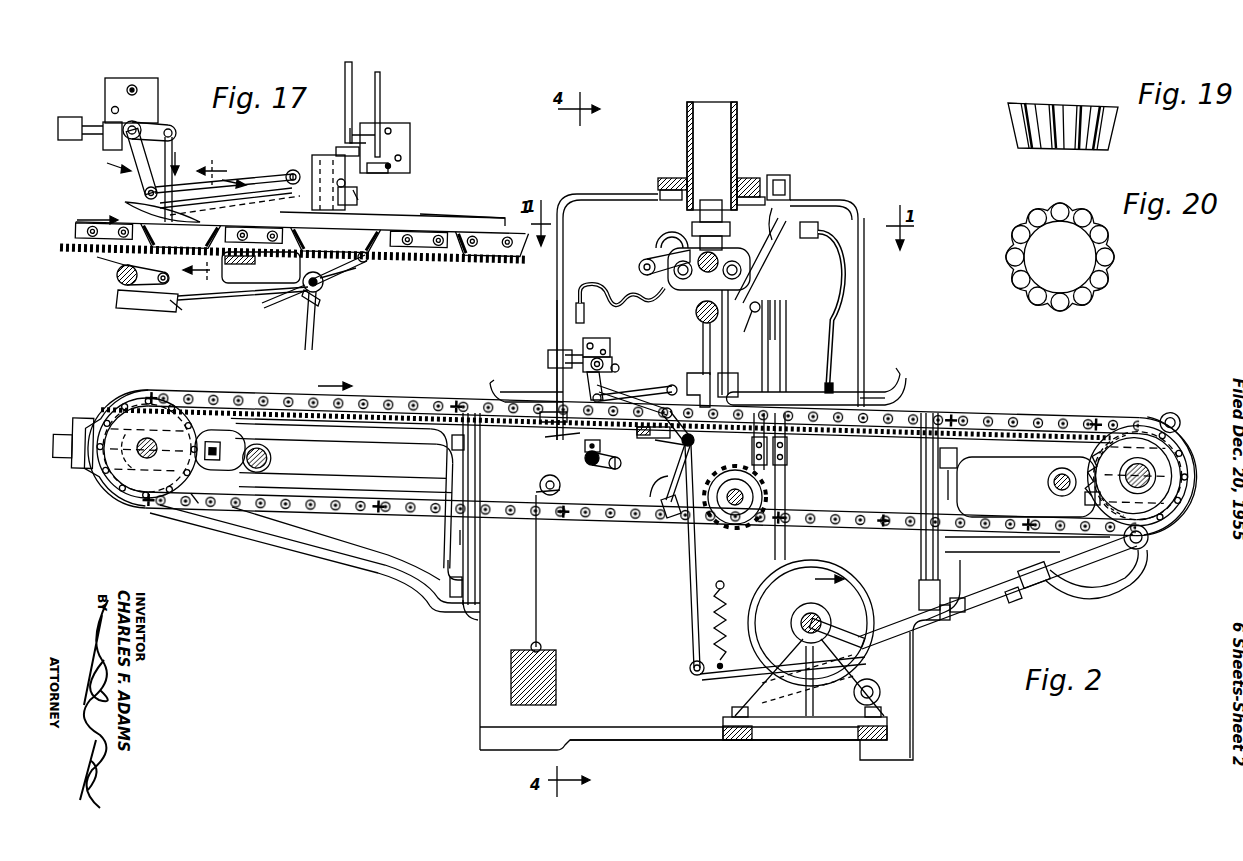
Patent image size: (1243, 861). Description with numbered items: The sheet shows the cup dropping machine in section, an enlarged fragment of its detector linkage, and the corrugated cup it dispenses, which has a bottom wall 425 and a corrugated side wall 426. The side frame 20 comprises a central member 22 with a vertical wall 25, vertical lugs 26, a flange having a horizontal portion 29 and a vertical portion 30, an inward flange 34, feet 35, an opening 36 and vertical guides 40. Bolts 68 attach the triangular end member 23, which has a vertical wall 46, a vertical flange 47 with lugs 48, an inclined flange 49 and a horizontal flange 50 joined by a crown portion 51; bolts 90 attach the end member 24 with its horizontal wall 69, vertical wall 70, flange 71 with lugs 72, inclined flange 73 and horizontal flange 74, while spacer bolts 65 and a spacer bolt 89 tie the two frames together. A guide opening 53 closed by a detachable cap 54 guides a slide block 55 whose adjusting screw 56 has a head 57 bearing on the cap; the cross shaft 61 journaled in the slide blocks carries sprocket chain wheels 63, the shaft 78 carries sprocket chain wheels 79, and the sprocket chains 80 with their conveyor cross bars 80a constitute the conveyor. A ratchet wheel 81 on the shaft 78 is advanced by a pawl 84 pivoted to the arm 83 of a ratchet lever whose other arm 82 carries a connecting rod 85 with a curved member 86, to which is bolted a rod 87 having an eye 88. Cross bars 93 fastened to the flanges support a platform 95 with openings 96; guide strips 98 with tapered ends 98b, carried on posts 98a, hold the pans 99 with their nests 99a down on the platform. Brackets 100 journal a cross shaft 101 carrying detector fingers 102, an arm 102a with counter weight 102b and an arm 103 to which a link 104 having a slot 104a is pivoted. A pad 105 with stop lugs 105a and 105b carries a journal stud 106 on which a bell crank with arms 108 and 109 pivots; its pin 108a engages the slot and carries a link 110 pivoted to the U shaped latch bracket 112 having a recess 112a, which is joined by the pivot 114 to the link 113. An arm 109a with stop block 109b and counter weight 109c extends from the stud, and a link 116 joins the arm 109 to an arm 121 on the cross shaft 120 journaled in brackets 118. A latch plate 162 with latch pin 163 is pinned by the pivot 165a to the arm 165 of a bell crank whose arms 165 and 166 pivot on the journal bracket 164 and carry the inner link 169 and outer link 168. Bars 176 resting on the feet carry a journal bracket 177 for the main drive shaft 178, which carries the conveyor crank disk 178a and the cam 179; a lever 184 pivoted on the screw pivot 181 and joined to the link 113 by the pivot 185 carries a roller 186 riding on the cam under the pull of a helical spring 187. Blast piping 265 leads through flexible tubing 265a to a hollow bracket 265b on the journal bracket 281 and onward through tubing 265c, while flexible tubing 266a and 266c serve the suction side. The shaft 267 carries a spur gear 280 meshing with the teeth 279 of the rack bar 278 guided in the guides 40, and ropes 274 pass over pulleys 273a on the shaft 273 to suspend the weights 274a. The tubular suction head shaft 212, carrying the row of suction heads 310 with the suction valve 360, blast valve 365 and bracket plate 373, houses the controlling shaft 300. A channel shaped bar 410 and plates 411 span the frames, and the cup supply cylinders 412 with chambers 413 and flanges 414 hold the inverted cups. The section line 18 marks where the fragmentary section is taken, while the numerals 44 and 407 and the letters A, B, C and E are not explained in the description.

In FIG. 2, the side frame 20 is at (612, 194).
In FIG. 2, the central member 22 is at (480, 675).
In FIG. 2, the end member 23 is at (375, 586).
In FIG. 2, the end member 24 is at (1022, 566).
In FIG. 2, the vertical wall 25 is at (710, 489).
In FIG. 2, the vertical lugs 26 is at (481, 447).
In FIG. 2, the horizontal portion 29 is at (822, 200).
In FIG. 2, the vertical portion 30 is at (556, 292).
In FIG. 2, the flange 34 is at (560, 424).
In FIG. 2, the feet 35 is at (830, 744).
In FIG. 2, the opening 36 is at (842, 586).
In FIG. 2, the vertical guides 40 is at (770, 366).
In FIG. 2, the spacer 44 is at (745, 196).
In FIG. 2, the vertical wall 46 is at (462, 537).
In FIG. 2, the vertical flange 47 is at (446, 488).
In FIG. 2, the lugs 48 is at (450, 450).
In FIG. 2, the inclined flange 49 is at (320, 568).
In FIG. 2, the horizontal flange 50 is at (385, 429).
In FIG. 2, the crown portion 51 is at (95, 478).
In FIG. 2, the guide openings 53 is at (240, 452).
In FIG. 2, the detachable caps 54 is at (78, 425).
In FIG. 2, the slide block 55 is at (158, 462).
In FIG. 2, the adjusting screw 56 is at (212, 462).
In FIG. 2, the head 57 is at (62, 461).
In FIG. 2, the cross shaft 61 is at (160, 435).
In FIG. 2, the sprocket chain wheels 63 is at (197, 501).
In FIG. 2, the spacer bolts 65 is at (273, 458).
In FIG. 2, the bolts 68 is at (451, 443).
In FIG. 2, the horizontal wall 69 is at (1050, 480).
In FIG. 2, the vertical wall 70 is at (958, 546).
In FIG. 2, the flange 71 is at (950, 494).
In FIG. 2, the lugs 72 is at (958, 586).
In FIG. 2, the inclined flange 73 is at (1012, 603).
In FIG. 2, the horizontal flange 74 is at (1005, 456).
In FIG. 2, the shaft 78 is at (1136, 445).
In FIG. 2, the sprocket chain wheels 79 is at (1085, 500).
In FIG. 2, the sprocket chains 80 is at (1040, 417).
In FIG. 2, the conveyor cross bars 80a is at (150, 396).
In FIG. 2, the ratchet wheel 81 is at (1100, 455).
In FIG. 2, the arm 82 is at (1148, 541).
In FIG. 2, the arm 83 is at (1168, 412).
In FIG. 2, the pawl 84 is at (1188, 440).
In FIG. 2, the connecting rod 85 is at (1020, 588).
In FIG. 2, the curved member 86 is at (692, 444).
In FIG. 2, the rod 87 is at (957, 613).
In FIG. 2, the eye 88 is at (790, 641).
In FIG. 2, the spacer bolt 89 is at (1055, 489).
In FIG. 2, the bolts 90 is at (950, 460).
In FIG. 17, the cross bars 93 is at (261, 267).
In FIG. 2, the cross bars 93 is at (300, 420).
In FIG. 17, the platform 95 is at (110, 259).
In FIG. 2, the platform 95 is at (984, 407).
In FIG. 17, the openings 96 is at (345, 269).
In FIG. 2, the longitudinal guide strips 98 is at (520, 390).
In FIG. 2, the posts 98a is at (870, 392).
In FIG. 2, the tapered ends 98b is at (494, 378).
In FIG. 17, the pans 99 is at (418, 215).
In FIG. 17, the nests 99a is at (462, 215).
In FIG. 17, the brackets 100 is at (302, 291).
In FIG. 2, the brackets 100 is at (670, 446).
In FIG. 17, the cross shaft 101 is at (318, 304).
In FIG. 2, the cross shaft 101 is at (690, 447).
In FIG. 17, the detector fingers 102 is at (368, 262).
In FIG. 17, the arm 102a is at (228, 300).
In FIG. 2, the arm 102a is at (652, 476).
In FIG. 17, the counter weight 102b is at (178, 312).
In FIG. 2, the counter weight 102b is at (664, 516).
In FIG. 17, the arm 103 is at (340, 281).
In FIG. 2, the arm 103 is at (646, 410).
In FIG. 17, the link 104 is at (263, 190).
In FIG. 2, the link 104 is at (628, 393).
In FIG. 17, the slot 104a is at (334, 240).
In FIG. 2, the slot 104a is at (575, 440).
In FIG. 17, the pad 105 is at (118, 82).
In FIG. 2, the pad 105 is at (612, 346).
In FIG. 17, the stop lug 105a is at (104, 148).
In FIG. 17, the stop lug 105b is at (112, 106).
In FIG. 2, the stop lug 105b is at (603, 349).
In FIG. 17, the journal stud 106 is at (150, 125).
In FIG. 2, the journal stud 106 is at (613, 360).
In FIG. 17, the arm 108 is at (140, 176).
In FIG. 2, the arm 108 is at (589, 385).
In FIG. 17, the pin 108a is at (140, 206).
In FIG. 17, the arm 109 is at (155, 128).
In FIG. 2, the arm 109 is at (606, 365).
In FIG. 17, the arm 109a is at (96, 122).
In FIG. 2, the arm 109a is at (565, 350).
In FIG. 17, the stop block 109b is at (137, 97).
In FIG. 17, the counter weight 109c is at (72, 140).
In FIG. 2, the counter weight 109c is at (552, 352).
In FIG. 17, the link 110 is at (280, 175).
In FIG. 2, the link 110 is at (670, 384).
In FIG. 17, the U shaped latch bracket 112 is at (312, 165).
In FIG. 2, the U shaped latch bracket 112 is at (688, 380).
In FIG. 17, the recess 112a is at (376, 187).
In FIG. 17, the link 113 is at (305, 341).
In FIG. 2, the link 113 is at (690, 558).
In FIG. 17, the pivot 114 is at (300, 311).
In FIG. 17, the link 116 is at (174, 146).
In FIG. 2, the link 116 is at (650, 478).
In FIG. 17, the journal brackets 118 is at (118, 281).
In FIG. 2, the journal brackets 118 is at (588, 453).
In FIG. 17, the cross shaft 120 is at (126, 299).
In FIG. 2, the cross shaft 120 is at (592, 466).
In FIG. 17, the arm 121 is at (146, 312).
In FIG. 17, the latch plate 162 is at (357, 197).
In FIG. 2, the latch plate 162 is at (725, 394).
In FIG. 17, the latch pin 163 is at (340, 186).
In FIG. 17, the journal bracket 164 is at (405, 156).
In FIG. 17, the arm 165 is at (385, 173).
In FIG. 17, the pivot 165a is at (338, 148).
In FIG. 17, the arm 166 is at (356, 133).
In FIG. 17, the outer link 168 is at (345, 71).
In FIG. 2, the outer link 168 is at (703, 340).
In FIG. 17, the inner link 169 is at (381, 101).
In FIG. 2, the inner link 169 is at (729, 324).
In FIG. 2, the bars 176 is at (745, 741).
In FIG. 2, the journal bracket 177 is at (742, 684).
In FIG. 2, the main drive shaft 178 is at (802, 612).
In FIG. 2, the conveyor crank disk 178a is at (846, 565).
In FIG. 2, the cam 179 is at (852, 600).
In FIG. 2, the screw pivot 181 is at (879, 689).
In FIG. 2, the lever 184 is at (858, 662).
In FIG. 2, the pivot 185 is at (689, 667).
In FIG. 2, the roller 186 is at (803, 683).
In FIG. 2, the helical spring 187 is at (712, 623).
In FIG. 2, the tubular suction head shaft 212 is at (700, 232).
In FIG. 2, the blast piping 265 is at (788, 338).
In FIG. 2, the flexible tubing 265a is at (845, 272).
In FIG. 2, the hollow bracket 265b is at (818, 226).
In FIG. 2, the flexible tubing 265c is at (790, 205).
In FIG. 2, the flexible tubing 266a is at (602, 290).
In FIG. 2, the flexible tubing 266c is at (656, 240).
In FIG. 2, the shaft 267 is at (735, 506).
In FIG. 2, the shaft 273 is at (540, 485).
In FIG. 2, the pulleys 273a is at (565, 488).
In FIG. 2, the ropes 274 is at (538, 552).
In FIG. 2, the weights 274a is at (557, 677).
In FIG. 2, the rack bar 278 is at (777, 320).
In FIG. 2, the teeth 279 is at (770, 448).
In FIG. 2, the spur gear 280 is at (788, 462).
In FIG. 2, the journal bracket 281 is at (777, 266).
In FIG. 2, the controlling shaft 300 is at (724, 244).
In FIG. 2, the suction head 310 is at (711, 201).
In FIG. 2, the tubular suction valve 360 is at (678, 286).
In FIG. 2, the tubular blast valve 365 is at (742, 317).
In FIG. 2, the bracket plate 373 is at (641, 262).
In FIG. 2, the knob 407 is at (696, 312).
In FIG. 2, the channel shaped bar 410 is at (777, 180).
In FIG. 2, the plates 411 is at (656, 190).
In FIG. 2, the cup supply cylinders 412 is at (738, 129).
In FIG. 2, the chamber 413 is at (712, 156).
In FIG. 2, the flanges 414 is at (670, 178).
In FIG. 19, the bottom wall 425 is at (1078, 150).
In FIG. 20, the bottom wall 425 is at (1060, 257).
In FIG. 19, the corrugated side wall 426 is at (1111, 134).
In FIG. 20, the corrugated side wall 426 is at (1108, 266).
In FIG. 17, the section line 18 is at (157, 222).
In FIG. 2, the direction arrow A is at (332, 374).
In FIG. 17, the direction arrow B is at (123, 167).
In FIG. 17, the direction arrow C is at (233, 190).
In FIG. 17, the direction arrow E is at (181, 161).